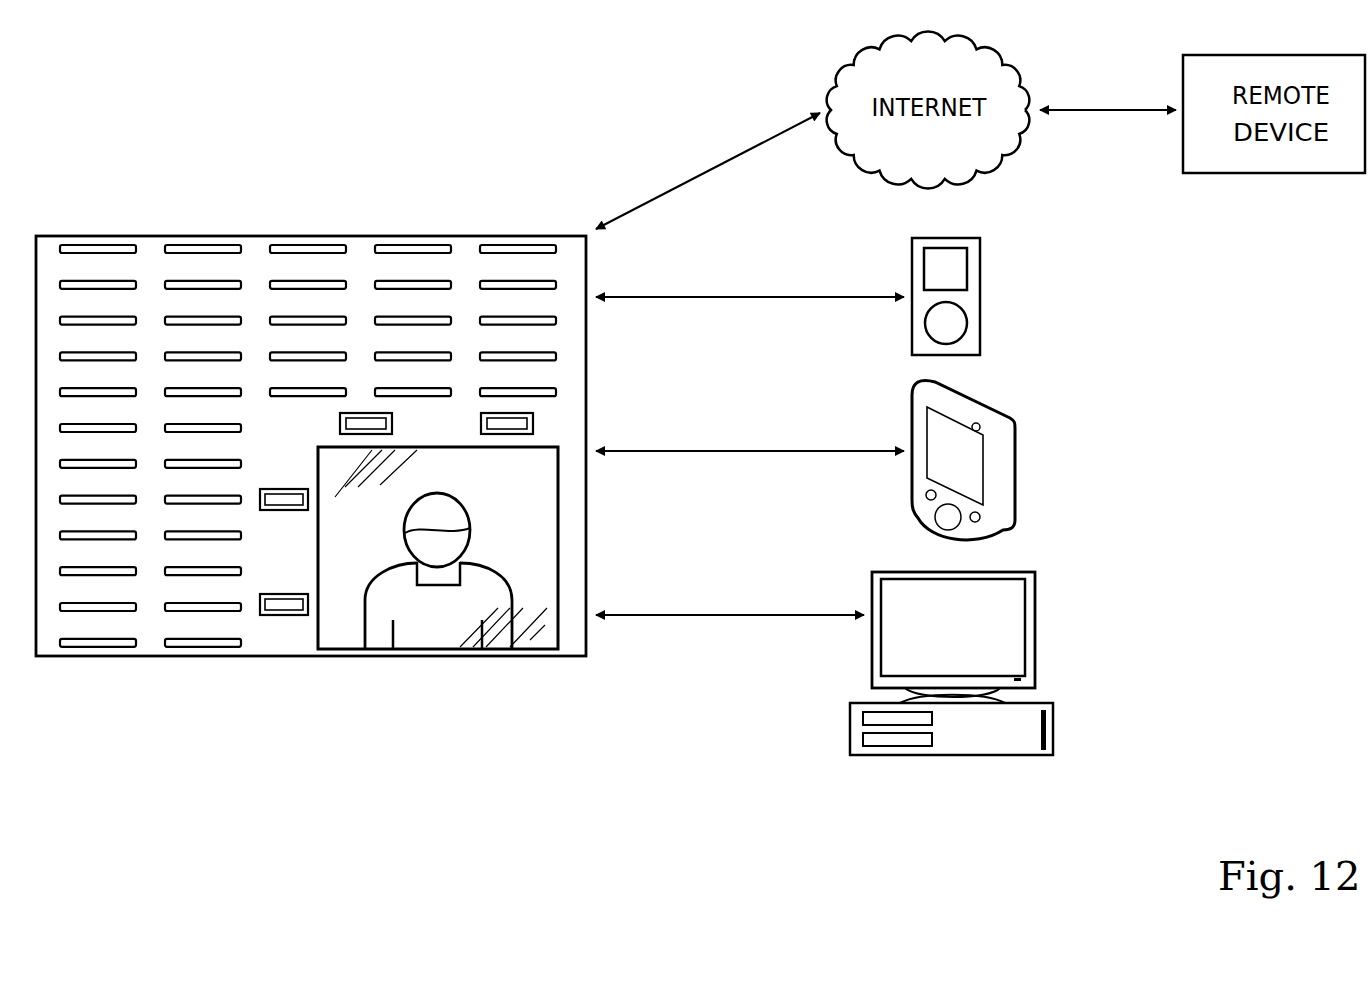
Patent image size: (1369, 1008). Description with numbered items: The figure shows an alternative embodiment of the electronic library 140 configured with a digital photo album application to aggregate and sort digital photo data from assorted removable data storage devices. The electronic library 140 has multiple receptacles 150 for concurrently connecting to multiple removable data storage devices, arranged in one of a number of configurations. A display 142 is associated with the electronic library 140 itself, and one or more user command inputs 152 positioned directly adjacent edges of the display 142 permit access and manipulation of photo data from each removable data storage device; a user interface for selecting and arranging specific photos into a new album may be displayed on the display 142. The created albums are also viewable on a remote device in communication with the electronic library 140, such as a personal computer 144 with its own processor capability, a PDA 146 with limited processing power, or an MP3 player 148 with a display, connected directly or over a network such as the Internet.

The electronic library 140 is at (167, 236).
The receptacles 150 is at (297, 245).
The user command inputs 152 is at (283, 503).
The display 142 is at (531, 600).
The MP3 player 148 is at (980, 293).
The PDA 146 is at (993, 385).
The personal computer 144 is at (993, 560).